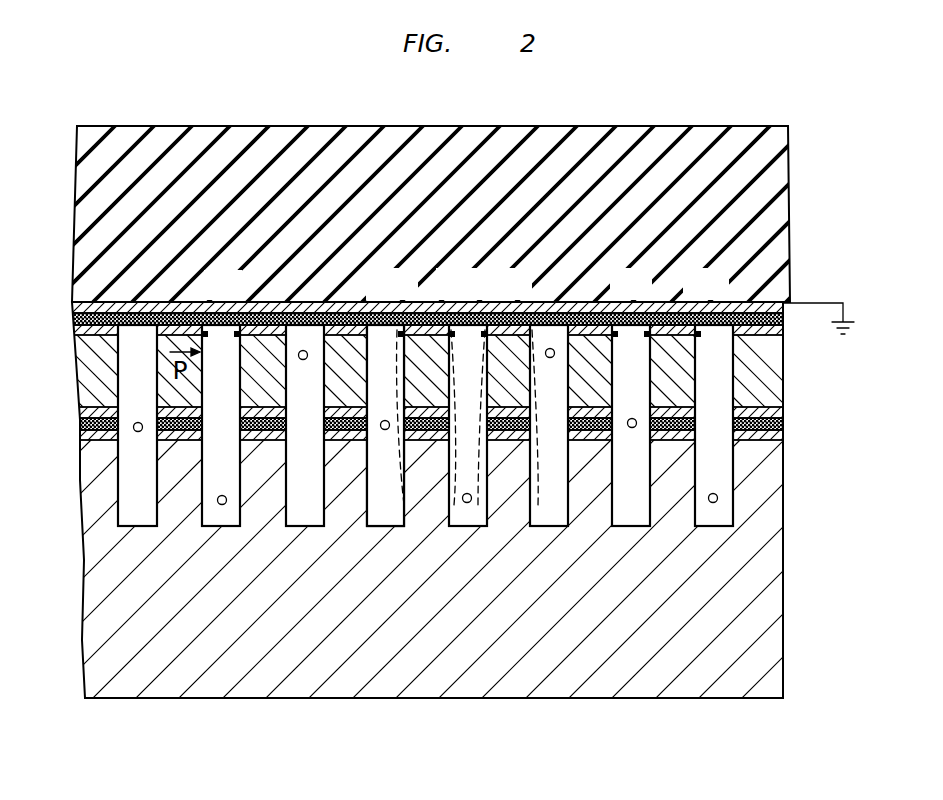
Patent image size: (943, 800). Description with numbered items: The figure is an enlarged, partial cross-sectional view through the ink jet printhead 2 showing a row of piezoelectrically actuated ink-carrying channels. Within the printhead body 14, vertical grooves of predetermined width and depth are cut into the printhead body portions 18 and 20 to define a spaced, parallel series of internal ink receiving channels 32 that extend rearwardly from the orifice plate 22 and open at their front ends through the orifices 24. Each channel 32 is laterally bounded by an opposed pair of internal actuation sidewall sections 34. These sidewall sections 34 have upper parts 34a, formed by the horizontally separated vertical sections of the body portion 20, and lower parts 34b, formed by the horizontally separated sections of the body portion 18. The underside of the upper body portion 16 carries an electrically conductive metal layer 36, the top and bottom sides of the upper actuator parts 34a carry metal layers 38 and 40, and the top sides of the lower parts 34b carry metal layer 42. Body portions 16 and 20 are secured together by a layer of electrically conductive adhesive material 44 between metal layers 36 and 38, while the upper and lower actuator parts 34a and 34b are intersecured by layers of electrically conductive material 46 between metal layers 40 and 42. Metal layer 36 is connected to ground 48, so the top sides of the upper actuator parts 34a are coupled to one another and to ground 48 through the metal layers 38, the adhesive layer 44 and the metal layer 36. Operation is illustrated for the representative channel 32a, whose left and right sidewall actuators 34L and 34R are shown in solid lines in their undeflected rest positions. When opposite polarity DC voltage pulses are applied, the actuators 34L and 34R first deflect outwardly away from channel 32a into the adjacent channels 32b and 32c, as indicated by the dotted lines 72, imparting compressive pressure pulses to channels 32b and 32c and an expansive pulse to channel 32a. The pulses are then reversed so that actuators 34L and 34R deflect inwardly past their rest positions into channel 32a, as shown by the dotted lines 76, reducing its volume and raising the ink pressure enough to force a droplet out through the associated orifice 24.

The ink jet printhead 2 is at (219, 64).
The printhead body 14 is at (533, 122).
The upper printhead body portion 16 is at (784, 173).
The printhead body portion 18 is at (741, 549).
The printhead body portion 20 is at (784, 376).
The orifice plate 22 is at (125, 517).
The orifices 24 is at (139, 431).
The internal ink receiving channels 32 is at (429, 450).
The channel 32a is at (458, 515).
The channel 32b is at (376, 515).
The channel 32c is at (539, 515).
The actuation sidewall sections 34 is at (236, 335).
The upper parts of sidewall sections 34a is at (77, 386).
The lower parts of sidewall sections 34b is at (84, 492).
The left sidewall actuator 34L is at (458, 295).
The right sidewall actuator 34R is at (493, 293).
The electrically conductive metal layer 36 is at (425, 307).
The electrically conductive metal layer 38 is at (425, 330).
The electrically conductive metal layer 40 is at (425, 412).
The electrically conductive metal layer 42 is at (425, 435).
The electrically conductive adhesive material layer 44 is at (425, 319).
The electrically conductive material layers 46 is at (425, 424).
The ground 48 is at (850, 312).
The dotted lines 72 is at (397, 381).
The dotted lines 76 is at (449, 450).